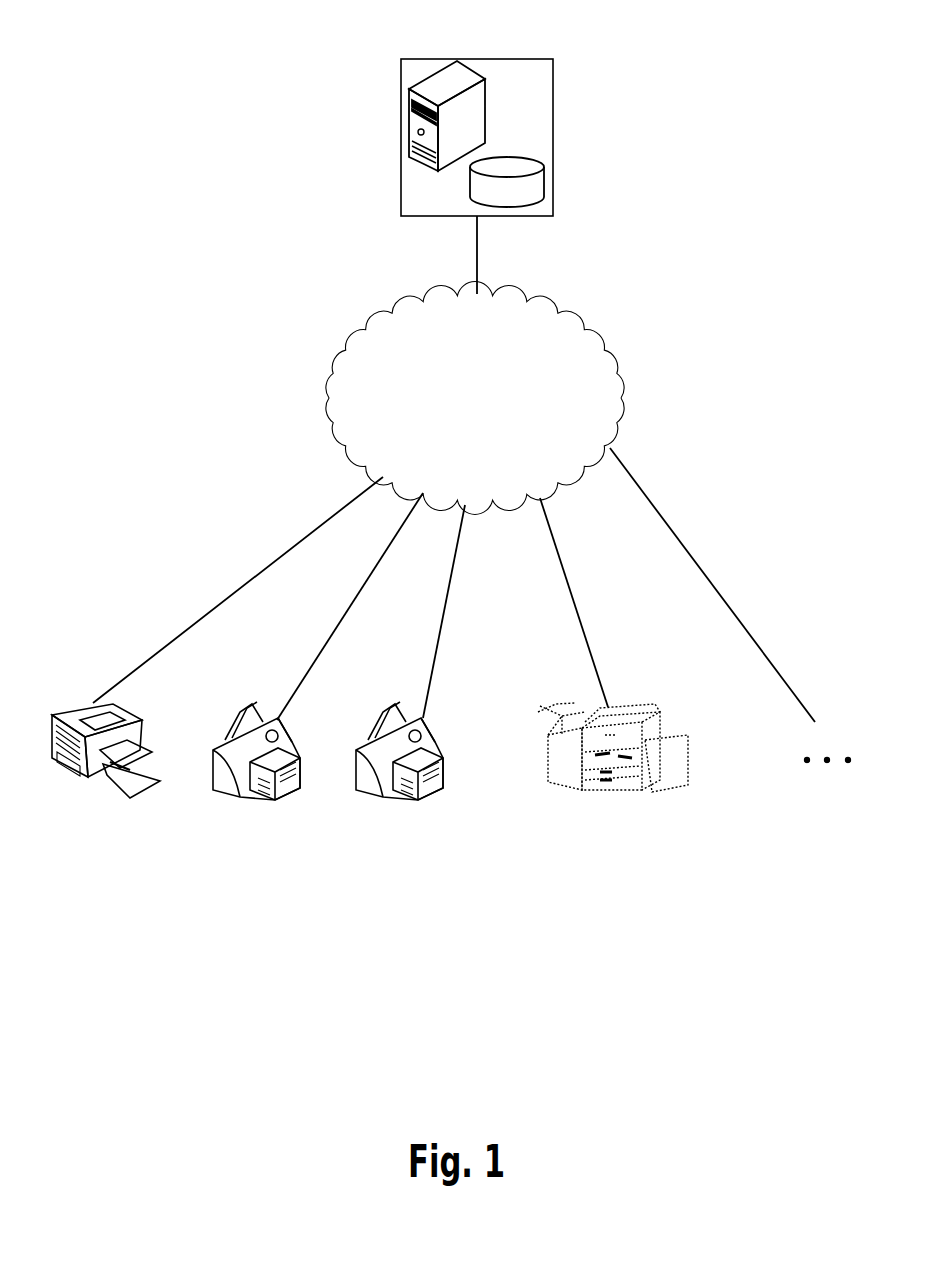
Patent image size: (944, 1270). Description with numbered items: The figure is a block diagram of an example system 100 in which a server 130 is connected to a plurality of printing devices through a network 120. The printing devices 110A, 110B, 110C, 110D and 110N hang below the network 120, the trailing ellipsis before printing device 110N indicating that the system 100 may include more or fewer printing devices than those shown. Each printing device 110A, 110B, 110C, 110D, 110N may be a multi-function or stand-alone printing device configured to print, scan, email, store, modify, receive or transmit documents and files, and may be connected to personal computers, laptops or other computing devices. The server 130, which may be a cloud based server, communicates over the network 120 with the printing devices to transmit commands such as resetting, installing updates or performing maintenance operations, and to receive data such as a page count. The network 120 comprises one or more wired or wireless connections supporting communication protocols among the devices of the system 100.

The system 100 is at (712, 153).
The server 130 is at (401, 73).
The network 120 is at (475, 398).
The printing device 110A is at (77, 777).
The printing device 110B is at (222, 793).
The printing device 110C is at (365, 793).
The printing device 110D is at (607, 785).
The printing device 110N is at (815, 773).